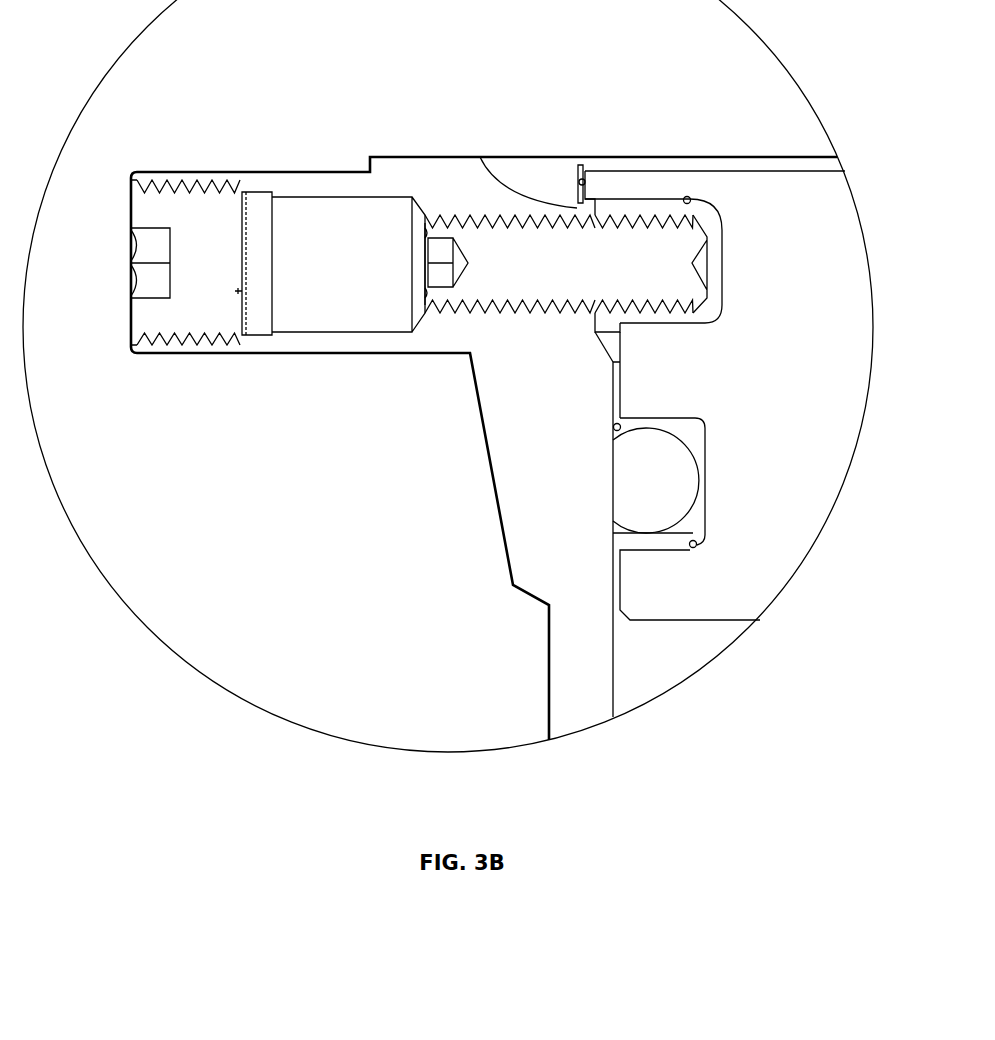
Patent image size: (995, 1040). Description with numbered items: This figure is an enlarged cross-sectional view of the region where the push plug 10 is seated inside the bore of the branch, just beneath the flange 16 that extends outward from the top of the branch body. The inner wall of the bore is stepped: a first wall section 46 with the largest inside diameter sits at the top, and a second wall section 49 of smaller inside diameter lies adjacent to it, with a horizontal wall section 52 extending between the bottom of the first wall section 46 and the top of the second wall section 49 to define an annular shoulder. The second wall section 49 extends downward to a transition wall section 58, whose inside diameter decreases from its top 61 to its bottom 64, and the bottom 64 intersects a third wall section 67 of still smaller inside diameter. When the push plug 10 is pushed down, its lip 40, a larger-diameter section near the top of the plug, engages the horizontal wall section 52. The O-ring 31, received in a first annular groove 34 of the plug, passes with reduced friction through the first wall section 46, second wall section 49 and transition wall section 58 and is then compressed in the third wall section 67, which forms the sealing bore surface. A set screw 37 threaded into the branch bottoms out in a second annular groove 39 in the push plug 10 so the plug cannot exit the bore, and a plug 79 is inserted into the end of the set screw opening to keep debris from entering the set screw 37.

The push plug 10 is at (468, 263).
The flange 16 is at (305, 170).
The O-ring 31 is at (656, 480).
The first annular groove 34 is at (692, 547).
The set screw 37 is at (488, 243).
The second annular groove 39 is at (687, 196).
The lip 40 is at (607, 178).
The first wall section 46 is at (583, 183).
The second wall section 49 is at (595, 207).
The horizontal wall section 52 is at (480, 156).
The transition wall section 58 is at (608, 350).
The top of the transition wall section 61 is at (595, 333).
The bottom of the transition wall section 64 is at (613, 362).
The third wall section 67 is at (613, 427).
The plug 79 is at (192, 318).